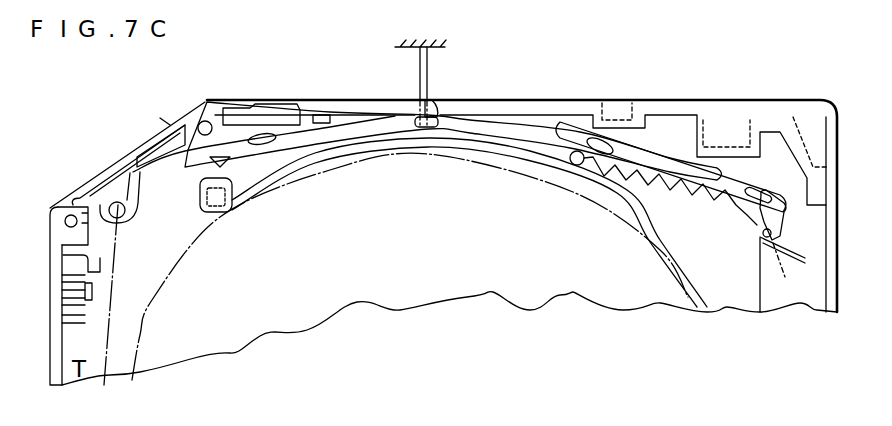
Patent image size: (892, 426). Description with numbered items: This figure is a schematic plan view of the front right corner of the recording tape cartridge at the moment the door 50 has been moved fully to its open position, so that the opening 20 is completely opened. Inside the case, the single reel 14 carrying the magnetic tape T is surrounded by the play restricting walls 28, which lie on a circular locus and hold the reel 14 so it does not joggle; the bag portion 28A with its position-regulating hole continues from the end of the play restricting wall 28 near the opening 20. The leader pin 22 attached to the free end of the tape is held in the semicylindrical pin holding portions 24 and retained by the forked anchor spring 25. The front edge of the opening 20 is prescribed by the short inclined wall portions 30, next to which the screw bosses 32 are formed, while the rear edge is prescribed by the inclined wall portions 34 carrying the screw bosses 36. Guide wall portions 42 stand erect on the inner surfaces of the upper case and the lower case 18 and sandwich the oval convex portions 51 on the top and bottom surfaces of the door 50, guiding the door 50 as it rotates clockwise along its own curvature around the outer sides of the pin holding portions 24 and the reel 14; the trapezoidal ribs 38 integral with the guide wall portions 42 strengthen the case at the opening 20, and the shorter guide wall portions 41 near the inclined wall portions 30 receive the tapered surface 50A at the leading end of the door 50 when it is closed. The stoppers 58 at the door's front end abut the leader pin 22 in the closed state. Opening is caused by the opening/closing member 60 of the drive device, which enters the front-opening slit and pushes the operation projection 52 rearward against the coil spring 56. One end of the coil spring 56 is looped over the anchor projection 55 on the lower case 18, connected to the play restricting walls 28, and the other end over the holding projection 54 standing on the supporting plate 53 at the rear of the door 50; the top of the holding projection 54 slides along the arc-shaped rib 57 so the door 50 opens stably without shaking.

The reel 14 is at (228, 328).
The lower case 18 is at (747, 100).
The opening 20 is at (122, 152).
The leader pin 22 is at (110, 253).
The pin holding portions 24 is at (120, 222).
The anchor spring 25 is at (50, 248).
The play restricting walls 28 is at (340, 150).
The bag portion 28A is at (203, 212).
The inclined wall portions 30 is at (80, 186).
The screw bosses 32 is at (66, 214).
The inclined wall portions 34 is at (283, 124).
The screw bosses 36 is at (207, 121).
The ribs 38 is at (163, 118).
The guide wall portions 41 is at (100, 183).
The guide wall portions 42 is at (565, 126).
The door 50 is at (530, 128).
The tapered surface 50A is at (150, 152).
The convex portions 51 is at (620, 143).
The operation projection 52 is at (436, 104).
The supporting plate 53 is at (781, 217).
The holding projection 54 is at (761, 236).
The anchor projection 55 is at (570, 163).
The coil spring 56 is at (630, 214).
The rib 57 is at (782, 271).
The stoppers 58 is at (186, 189).
The opening/closing member 60 is at (415, 73).